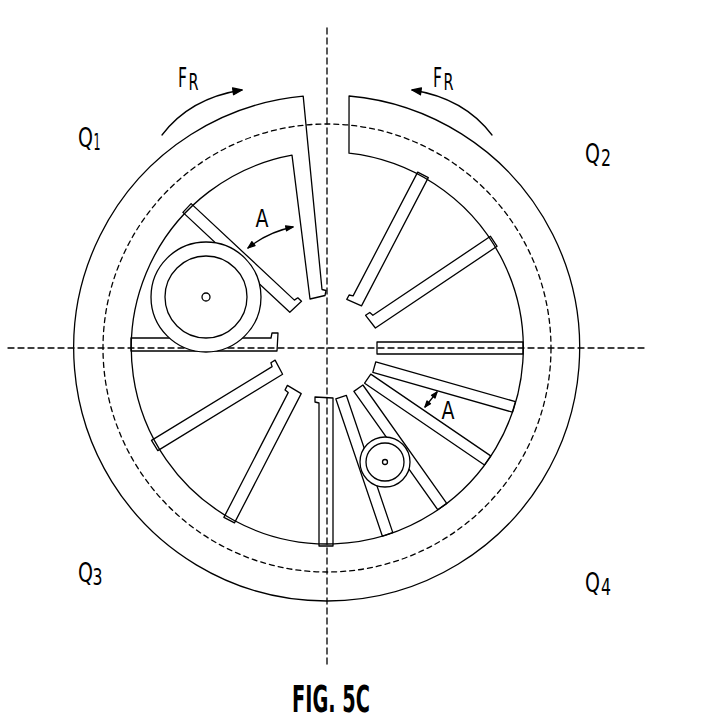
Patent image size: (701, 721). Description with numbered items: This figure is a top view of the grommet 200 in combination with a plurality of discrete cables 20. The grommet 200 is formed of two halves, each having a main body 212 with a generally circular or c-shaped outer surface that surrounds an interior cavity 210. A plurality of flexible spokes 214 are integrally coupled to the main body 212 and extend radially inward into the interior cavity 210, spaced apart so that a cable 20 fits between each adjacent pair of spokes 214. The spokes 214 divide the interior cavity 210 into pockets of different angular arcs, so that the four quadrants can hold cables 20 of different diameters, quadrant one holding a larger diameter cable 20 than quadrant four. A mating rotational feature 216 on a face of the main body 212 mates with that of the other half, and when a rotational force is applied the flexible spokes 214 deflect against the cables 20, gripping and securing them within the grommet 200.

The grommet 200 is at (331, 345).
The interior cavity 210 is at (363, 347).
The main body 212 is at (559, 432).
The flexible spokes 214 is at (467, 268).
The mating rotational feature 216 is at (147, 214).
The cable 20 is at (151, 298).